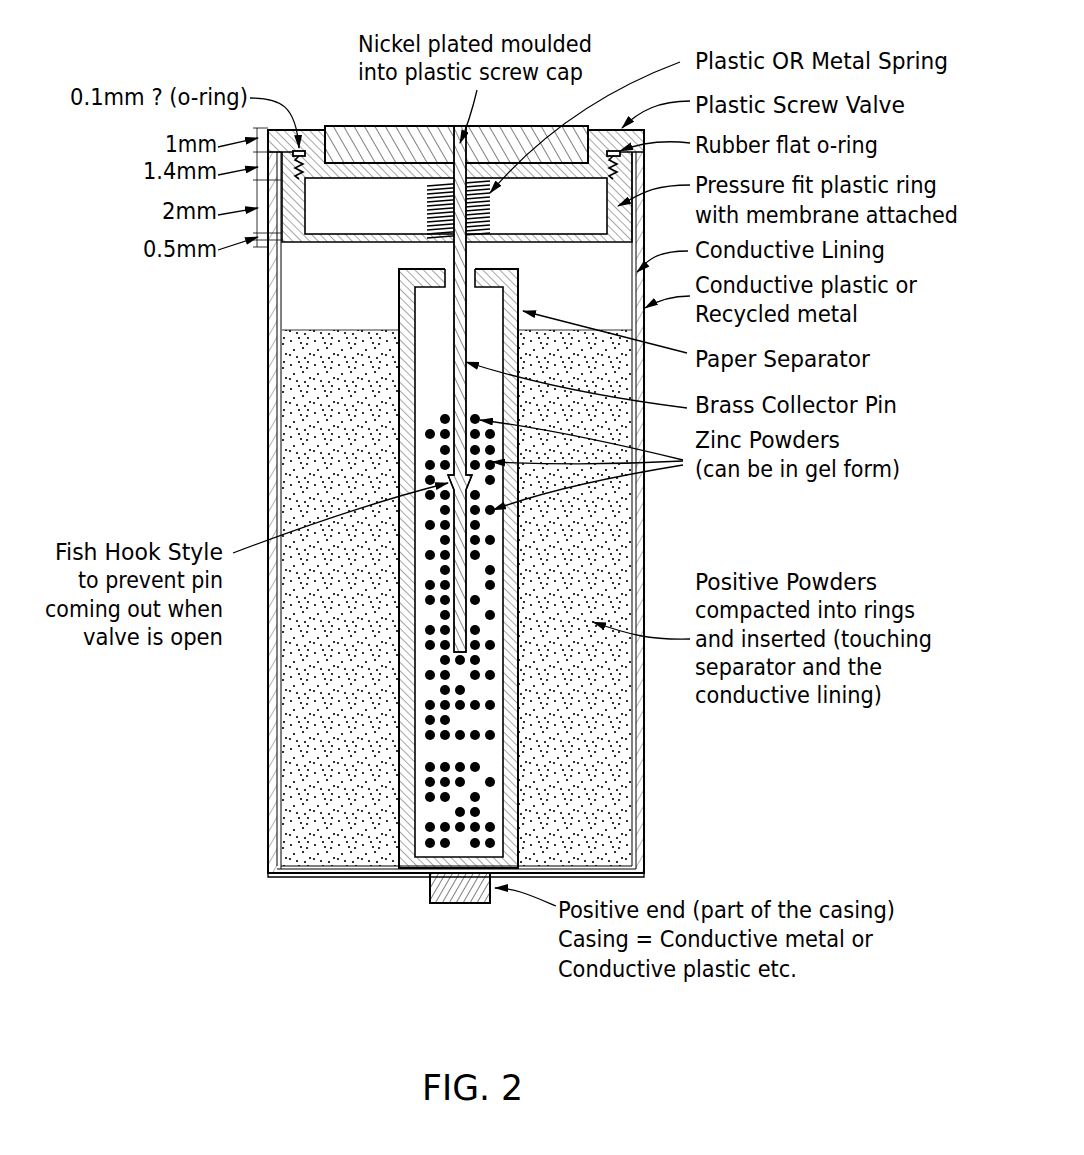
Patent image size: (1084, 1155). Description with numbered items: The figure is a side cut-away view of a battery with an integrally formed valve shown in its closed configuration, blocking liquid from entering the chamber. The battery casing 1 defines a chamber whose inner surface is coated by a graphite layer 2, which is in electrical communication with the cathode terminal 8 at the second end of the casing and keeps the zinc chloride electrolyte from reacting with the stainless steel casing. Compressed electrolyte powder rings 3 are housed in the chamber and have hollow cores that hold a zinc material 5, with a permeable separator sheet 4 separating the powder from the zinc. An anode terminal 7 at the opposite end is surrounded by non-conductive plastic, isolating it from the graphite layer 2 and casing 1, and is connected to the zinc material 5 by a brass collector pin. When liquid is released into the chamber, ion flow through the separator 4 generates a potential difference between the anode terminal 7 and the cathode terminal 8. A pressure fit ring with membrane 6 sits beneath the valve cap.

The battery casing 1 is at (645, 500).
The graphite layer 2 is at (635, 528).
The compressed electrolyte powder rings 3 is at (608, 722).
The permeable separator sheet 4 is at (510, 755).
The zinc material 5 is at (495, 782).
The pressure fit plastic ring with membrane 6 is at (432, 241).
The anode terminal 7 is at (343, 127).
The cathode terminal 8 is at (428, 888).